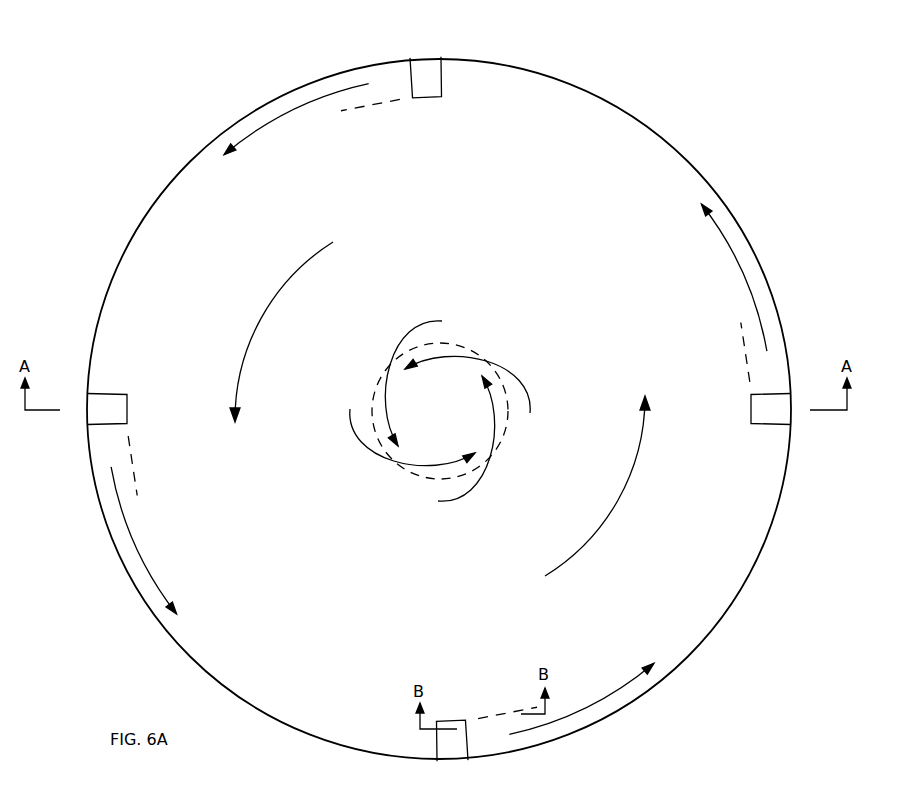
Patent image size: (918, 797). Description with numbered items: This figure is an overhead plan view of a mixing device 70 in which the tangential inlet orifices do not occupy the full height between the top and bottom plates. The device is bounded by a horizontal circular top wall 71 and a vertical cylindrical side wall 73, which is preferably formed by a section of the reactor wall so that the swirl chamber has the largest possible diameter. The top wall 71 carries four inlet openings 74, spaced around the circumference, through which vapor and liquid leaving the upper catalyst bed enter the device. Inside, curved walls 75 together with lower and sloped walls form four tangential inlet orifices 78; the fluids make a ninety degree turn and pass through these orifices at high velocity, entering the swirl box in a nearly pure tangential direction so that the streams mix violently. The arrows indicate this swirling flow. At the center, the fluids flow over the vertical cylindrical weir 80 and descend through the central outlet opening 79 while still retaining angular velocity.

The mixing device 70 is at (748, 194).
The horizontal circular top wall 71 is at (311, 562).
The vertical cylindrical side wall 73 is at (726, 624).
The inlet openings 74 is at (430, 76).
The curved walls 75 is at (368, 106).
The tangential inlet orifices 78 is at (382, 85).
The central outlet opening 79 is at (438, 383).
The vertical cylindrical weir 80 is at (506, 425).